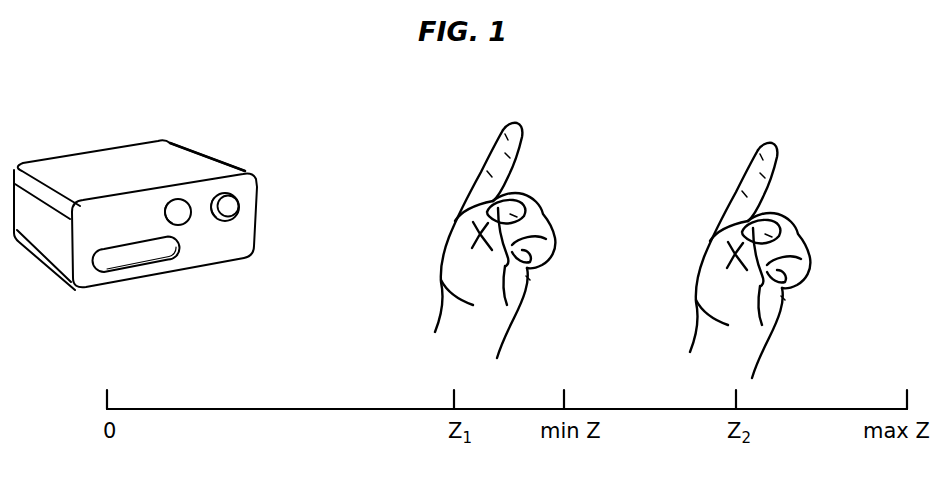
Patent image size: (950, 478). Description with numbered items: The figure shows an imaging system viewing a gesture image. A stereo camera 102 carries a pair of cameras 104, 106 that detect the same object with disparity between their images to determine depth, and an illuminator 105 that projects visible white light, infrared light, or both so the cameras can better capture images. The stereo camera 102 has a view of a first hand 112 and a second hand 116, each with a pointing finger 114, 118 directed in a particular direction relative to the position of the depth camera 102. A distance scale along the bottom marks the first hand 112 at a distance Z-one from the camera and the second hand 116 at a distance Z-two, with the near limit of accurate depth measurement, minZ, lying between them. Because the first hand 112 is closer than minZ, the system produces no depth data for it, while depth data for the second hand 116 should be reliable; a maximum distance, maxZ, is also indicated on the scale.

The stereo camera 102 is at (162, 206).
The camera 104 is at (178, 212).
The illuminator 105 is at (137, 260).
The camera 106 is at (232, 210).
The first hand 112 is at (472, 240).
The pointing finger 114 is at (513, 139).
The second hand 116 is at (793, 251).
The pointing finger 118 is at (796, 172).